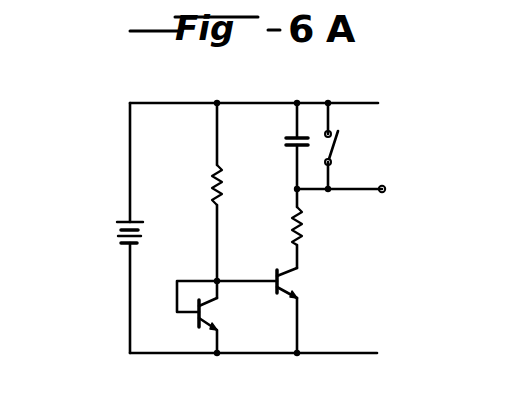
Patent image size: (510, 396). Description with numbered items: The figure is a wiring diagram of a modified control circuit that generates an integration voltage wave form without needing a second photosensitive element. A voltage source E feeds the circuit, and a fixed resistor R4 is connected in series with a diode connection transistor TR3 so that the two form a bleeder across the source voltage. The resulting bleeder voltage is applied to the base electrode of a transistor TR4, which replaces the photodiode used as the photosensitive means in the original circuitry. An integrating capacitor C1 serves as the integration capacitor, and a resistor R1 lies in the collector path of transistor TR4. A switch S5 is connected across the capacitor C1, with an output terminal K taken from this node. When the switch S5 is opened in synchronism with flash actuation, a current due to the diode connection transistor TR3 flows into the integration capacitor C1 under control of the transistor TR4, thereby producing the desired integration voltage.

The fixed resistor R4 is at (212, 186).
The battery / power source E is at (141, 233).
The integrating capacitor C1 is at (283, 140).
The switch S5 is at (336, 150).
The output terminal K is at (381, 201).
The resistor R1 is at (303, 231).
The transistor TR4 is at (286, 283).
The diode connection transistor TR3 is at (203, 313).